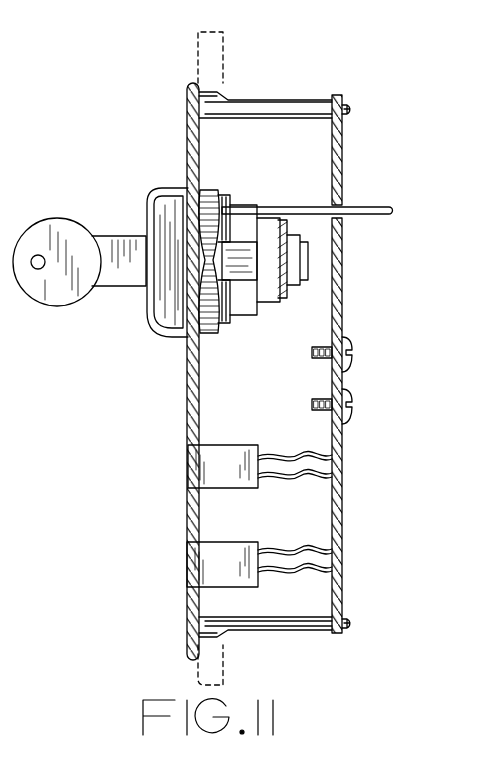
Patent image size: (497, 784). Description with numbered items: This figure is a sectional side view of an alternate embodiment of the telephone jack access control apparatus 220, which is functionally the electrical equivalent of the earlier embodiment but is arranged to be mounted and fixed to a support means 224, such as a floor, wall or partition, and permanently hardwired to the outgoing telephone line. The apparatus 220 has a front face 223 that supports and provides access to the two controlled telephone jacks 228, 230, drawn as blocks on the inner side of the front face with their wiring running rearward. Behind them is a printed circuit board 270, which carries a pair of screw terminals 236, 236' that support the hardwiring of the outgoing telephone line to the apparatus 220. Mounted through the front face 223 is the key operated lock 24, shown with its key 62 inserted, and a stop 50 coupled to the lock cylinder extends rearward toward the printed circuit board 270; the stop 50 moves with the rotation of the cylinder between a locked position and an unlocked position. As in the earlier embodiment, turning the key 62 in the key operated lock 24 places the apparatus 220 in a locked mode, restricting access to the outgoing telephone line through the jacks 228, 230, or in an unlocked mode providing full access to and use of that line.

The apparatus 220 is at (160, 130).
The front face 223 is at (187, 410).
The printed circuit board 270 is at (341, 166).
The support means 224 is at (222, 62).
The key 62 is at (57, 218).
The key operated lock 24 is at (162, 190).
The stop 50 is at (375, 207).
The screw terminal 236 is at (355, 344).
The screw terminal 236' is at (366, 393).
The controlled telephone jack 228 is at (187, 465).
The controlled telephone jack 230 is at (187, 568).